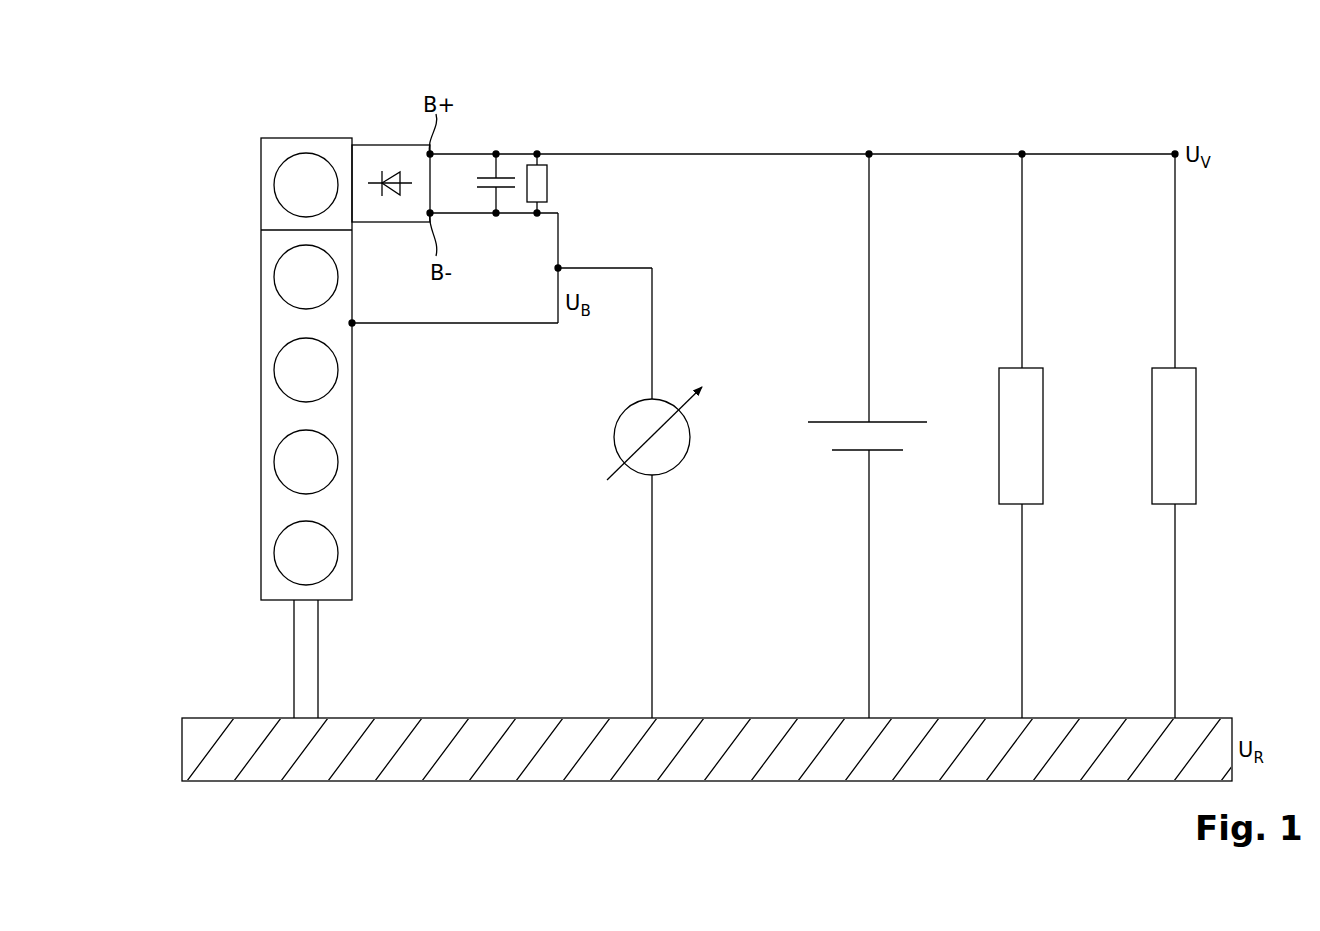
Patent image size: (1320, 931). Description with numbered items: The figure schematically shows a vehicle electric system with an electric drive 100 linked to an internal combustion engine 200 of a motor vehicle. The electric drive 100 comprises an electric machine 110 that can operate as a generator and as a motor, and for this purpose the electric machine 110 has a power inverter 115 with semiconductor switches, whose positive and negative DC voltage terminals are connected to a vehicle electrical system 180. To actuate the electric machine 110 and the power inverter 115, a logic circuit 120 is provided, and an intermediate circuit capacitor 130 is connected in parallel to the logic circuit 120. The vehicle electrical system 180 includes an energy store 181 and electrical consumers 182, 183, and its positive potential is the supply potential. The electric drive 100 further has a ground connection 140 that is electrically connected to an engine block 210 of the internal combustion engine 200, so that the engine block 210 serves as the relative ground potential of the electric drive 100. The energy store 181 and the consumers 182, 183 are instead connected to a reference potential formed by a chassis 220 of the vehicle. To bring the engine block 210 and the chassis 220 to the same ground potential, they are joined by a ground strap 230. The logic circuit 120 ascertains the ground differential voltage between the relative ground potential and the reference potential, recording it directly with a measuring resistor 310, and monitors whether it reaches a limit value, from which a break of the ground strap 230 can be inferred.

The electric drive 100 is at (551, 142).
The electric machine 110 is at (252, 147).
The power inverter 115 is at (388, 145).
The logic circuit 120 is at (548, 182).
The intermediate circuit capacitor 130 is at (487, 176).
The ground connection 140 is at (354, 325).
The vehicle electrical system 180 is at (1026, 392).
The energy store 181 is at (917, 421).
The electrical consumer 182 is at (1043, 368).
The electrical consumer 183 is at (1196, 368).
The internal combustion engine 200 is at (252, 345).
The engine block 210 is at (261, 306).
The chassis 220 is at (182, 750).
The ground strap 230 is at (294, 659).
The measuring resistor 310 is at (690, 437).